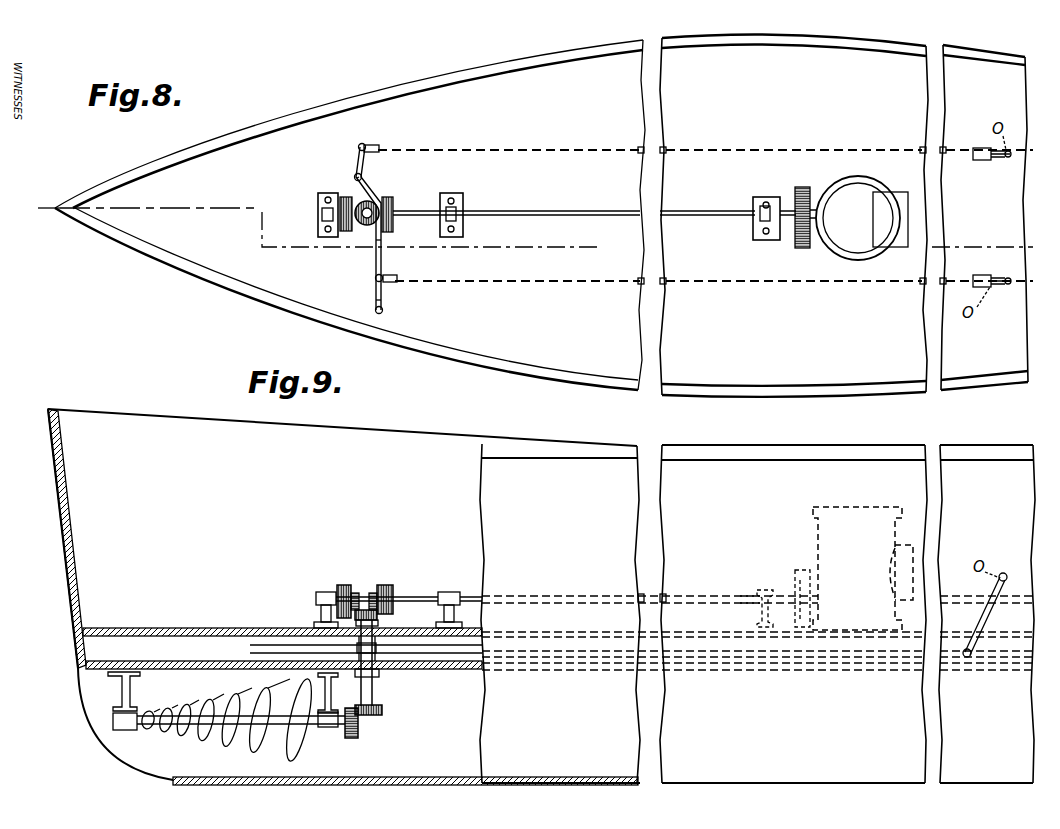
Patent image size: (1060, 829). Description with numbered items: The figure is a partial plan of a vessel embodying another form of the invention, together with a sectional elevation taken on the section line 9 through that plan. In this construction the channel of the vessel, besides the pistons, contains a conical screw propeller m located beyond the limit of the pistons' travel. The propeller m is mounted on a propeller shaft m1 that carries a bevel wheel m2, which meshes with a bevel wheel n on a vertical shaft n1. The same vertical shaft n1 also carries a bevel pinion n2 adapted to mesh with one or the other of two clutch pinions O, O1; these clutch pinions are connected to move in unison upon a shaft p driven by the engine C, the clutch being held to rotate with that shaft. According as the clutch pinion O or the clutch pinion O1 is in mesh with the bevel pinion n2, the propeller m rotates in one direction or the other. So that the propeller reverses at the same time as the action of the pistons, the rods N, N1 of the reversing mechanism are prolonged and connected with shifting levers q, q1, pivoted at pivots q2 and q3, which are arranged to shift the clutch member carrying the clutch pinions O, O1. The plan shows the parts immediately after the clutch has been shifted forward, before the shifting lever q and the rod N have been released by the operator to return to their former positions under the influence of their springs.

In FIG. 8, the section line 9 is at (534, 223).
In FIG. 8, the clutch pinion O is at (336, 195).
In FIG. 9, the clutch pinion O is at (339, 585).
In FIG. 8, the clutch pinion O1 is at (396, 209).
In FIG. 9, the clutch pinion O1 is at (386, 584).
In FIG. 8, the shaft p is at (493, 210).
In FIG. 9, the shaft p is at (428, 596).
In FIG. 8, the shifting lever q is at (356, 150).
In FIG. 9, the shifting lever q is at (356, 592).
In FIG. 8, the shifting lever q1 is at (375, 262).
In FIG. 8, the pivot q2 is at (363, 179).
In FIG. 8, the pivot q3 is at (375, 290).
In FIG. 9, the bevel wheel n is at (384, 714).
In FIG. 9, the vertical shaft n1 is at (376, 680).
In FIG. 8, the bevel pinion n2 is at (390, 198).
In FIG. 9, the bevel pinion n2 is at (388, 610).
In FIG. 8, the rod N is at (752, 150).
In FIG. 9, the rod N is at (376, 680).
In FIG. 8, the rod N1 is at (782, 283).
In FIG. 9, the screw propeller m is at (232, 694).
In FIG. 9, the propeller shaft m1 is at (315, 728).
In FIG. 9, the bevel wheel m2 is at (360, 733).
In FIG. 8, the engine C is at (862, 218).
In FIG. 9, the engine C is at (818, 538).